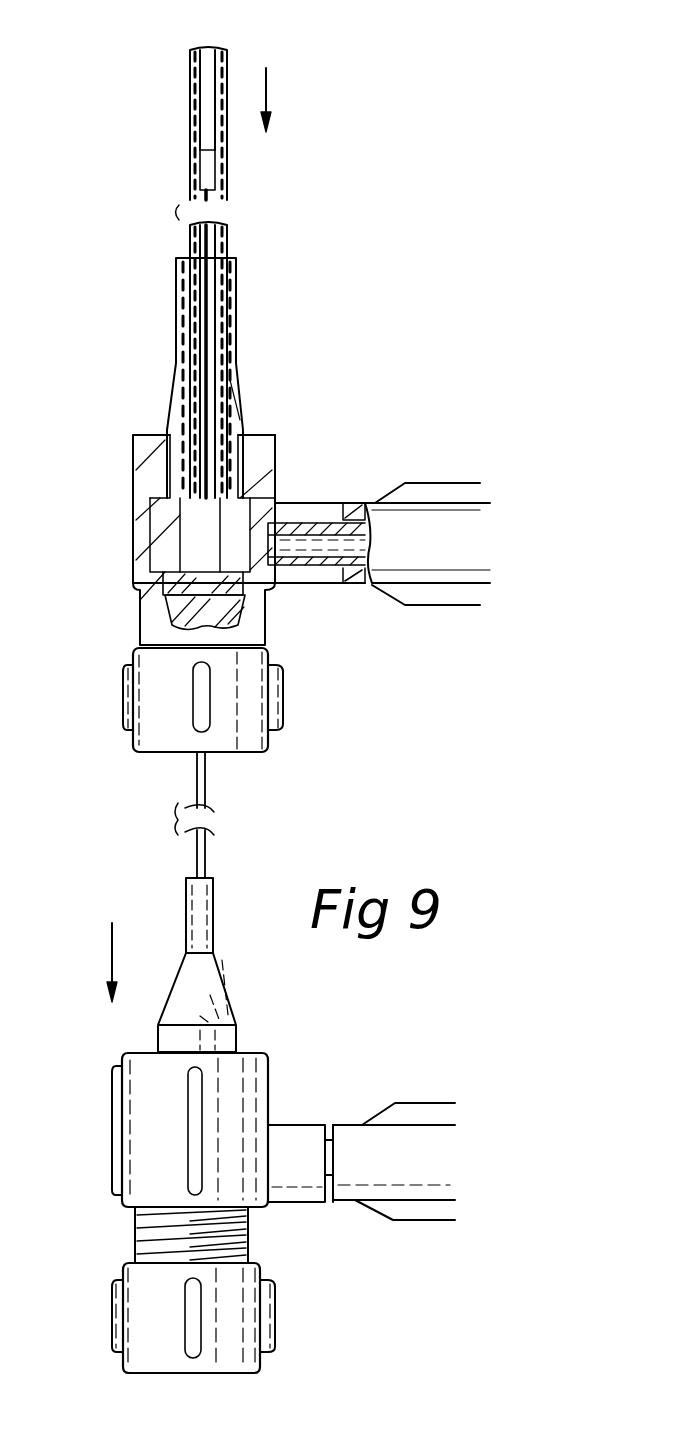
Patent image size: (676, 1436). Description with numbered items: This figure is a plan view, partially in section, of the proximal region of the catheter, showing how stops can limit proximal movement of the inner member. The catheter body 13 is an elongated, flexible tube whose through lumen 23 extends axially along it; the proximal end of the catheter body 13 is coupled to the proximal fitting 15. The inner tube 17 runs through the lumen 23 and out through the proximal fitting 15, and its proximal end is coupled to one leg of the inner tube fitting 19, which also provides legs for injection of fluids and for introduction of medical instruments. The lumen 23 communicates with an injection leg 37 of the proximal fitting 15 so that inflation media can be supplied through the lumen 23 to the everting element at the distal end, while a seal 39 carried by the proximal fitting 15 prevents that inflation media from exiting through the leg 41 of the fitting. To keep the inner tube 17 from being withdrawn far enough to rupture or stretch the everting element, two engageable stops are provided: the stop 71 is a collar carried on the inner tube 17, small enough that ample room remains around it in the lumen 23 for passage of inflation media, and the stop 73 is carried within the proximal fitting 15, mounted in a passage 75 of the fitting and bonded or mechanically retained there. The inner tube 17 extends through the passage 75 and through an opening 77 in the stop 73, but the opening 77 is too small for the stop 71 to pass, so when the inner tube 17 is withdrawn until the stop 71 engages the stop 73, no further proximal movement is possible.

The catheter body 13 is at (190, 58).
The through lumen 23 is at (192, 96).
The stop 71 is at (212, 170).
The passage 75 is at (138, 506).
The stop 73 is at (136, 568).
The seal 39 is at (150, 603).
The opening 77 is at (258, 606).
The injection leg 37 is at (330, 503).
The proximal fitting 15 is at (410, 483).
The leg 41 is at (152, 690).
The inner tube 17 is at (205, 793).
The inner tube fitting 19 is at (368, 1102).